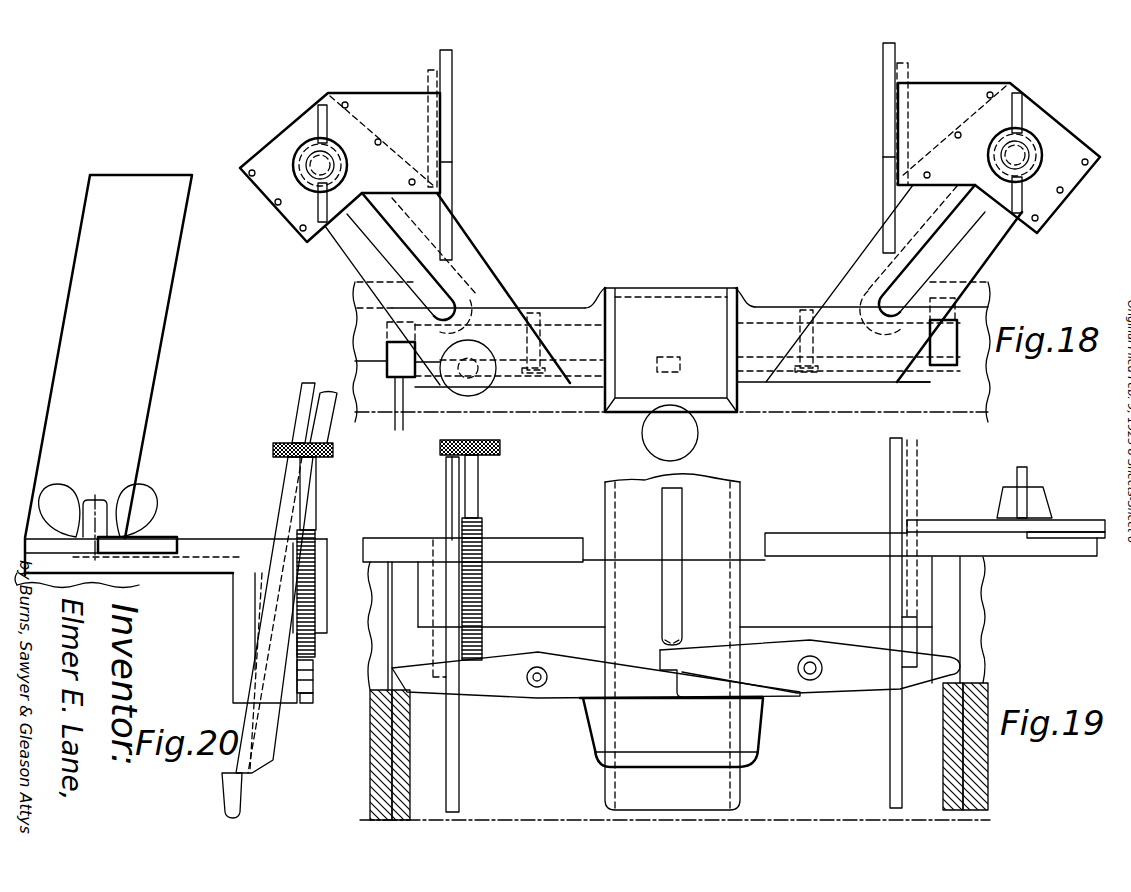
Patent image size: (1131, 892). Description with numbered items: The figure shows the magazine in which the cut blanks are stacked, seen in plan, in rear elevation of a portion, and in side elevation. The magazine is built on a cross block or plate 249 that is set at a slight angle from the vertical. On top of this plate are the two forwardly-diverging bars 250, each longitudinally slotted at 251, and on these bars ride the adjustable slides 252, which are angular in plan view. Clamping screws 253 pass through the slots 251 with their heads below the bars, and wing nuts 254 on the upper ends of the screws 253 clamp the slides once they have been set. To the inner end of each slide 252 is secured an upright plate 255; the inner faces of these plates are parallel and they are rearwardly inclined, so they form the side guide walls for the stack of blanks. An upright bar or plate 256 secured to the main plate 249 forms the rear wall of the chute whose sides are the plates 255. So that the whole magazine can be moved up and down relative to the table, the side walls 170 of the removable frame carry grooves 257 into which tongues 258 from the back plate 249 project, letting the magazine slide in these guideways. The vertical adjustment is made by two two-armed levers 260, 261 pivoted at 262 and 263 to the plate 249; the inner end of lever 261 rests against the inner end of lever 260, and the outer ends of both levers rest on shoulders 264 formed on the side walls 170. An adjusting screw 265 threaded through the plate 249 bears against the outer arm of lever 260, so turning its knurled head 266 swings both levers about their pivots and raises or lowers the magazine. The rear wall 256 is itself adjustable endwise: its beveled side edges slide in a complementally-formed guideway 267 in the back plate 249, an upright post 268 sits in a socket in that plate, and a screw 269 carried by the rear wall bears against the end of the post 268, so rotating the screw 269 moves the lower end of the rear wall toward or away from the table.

In FIG. 18, the side walls of the removable frame 170 is at (372, 350).
In FIG. 19, the side walls of the removable frame 170 is at (385, 761).
In FIG. 18, the cross block or plate 249 is at (556, 323).
In FIG. 19, the cross block or plate 249 is at (730, 611).
In FIG. 20, the cross block or plate 249 is at (327, 589).
In FIG. 18, the forwardly-diverging bars 250 is at (333, 240).
In FIG. 19, the forwardly-diverging bars 250 is at (940, 527).
In FIG. 20, the forwardly-diverging bars 250 is at (201, 546).
In FIG. 18, the slots 251 is at (380, 232).
In FIG. 20, the slots 251 is at (185, 562).
In FIG. 18, the adjustable slides 252 is at (372, 100).
In FIG. 18, the bolt 253 is at (333, 160).
In FIG. 19, the bolt 253 is at (1028, 482).
In FIG. 20, the bolt 253 is at (97, 500).
In FIG. 18, the wing nuts 254 is at (300, 152).
In FIG. 19, the wing nuts 254 is at (1008, 500).
In FIG. 20, the wing nuts 254 is at (145, 500).
In FIG. 18, the upright plate 255 is at (447, 106).
In FIG. 19, the upright plate 255 is at (901, 456).
In FIG. 20, the upright plate 255 is at (160, 290).
In FIG. 18, the upright bar or plate 256 is at (708, 293).
In FIG. 19, the upright bar or plate 256 is at (740, 518).
In FIG. 20, the upright bar or plate 256 is at (302, 407).
In FIG. 18, the grooves 257 is at (387, 323).
In FIG. 18, the tongues 258 is at (397, 308).
In FIG. 20, the tongues 258 is at (238, 610).
In FIG. 18, the two-armed lever 260 is at (412, 412).
In FIG. 19, the two-armed lever 260 is at (570, 690).
In FIG. 20, the two-armed lever 260 is at (306, 704).
In FIG. 18, the two-armed lever 261 is at (930, 366).
In FIG. 19, the two-armed lever 261 is at (868, 681).
In FIG. 18, the pivot 262 is at (545, 338).
In FIG. 19, the pivot 262 is at (532, 688).
In FIG. 20, the pivot 262 is at (315, 676).
In FIG. 18, the pivot 263 is at (815, 341).
In FIG. 19, the pivot 263 is at (805, 681).
In FIG. 19, the shoulders 264 is at (406, 706).
In FIG. 18, the adjusting screw 265 is at (472, 384).
In FIG. 19, the adjusting screw 265 is at (481, 499).
In FIG. 20, the adjusting screw 265 is at (316, 513).
In FIG. 18, the knurled head 266 is at (460, 392).
In FIG. 19, the knurled head 266 is at (500, 448).
In FIG. 20, the knurled head 266 is at (334, 451).
In FIG. 18, the guideway 267 is at (617, 321).
In FIG. 19, the guideway 267 is at (612, 610).
In FIG. 20, the guideway 267 is at (262, 575).
In FIG. 19, the upright post 268 is at (678, 532).
In FIG. 20, the upright post 268 is at (318, 478).
In FIG. 18, the screw 269 is at (670, 433).